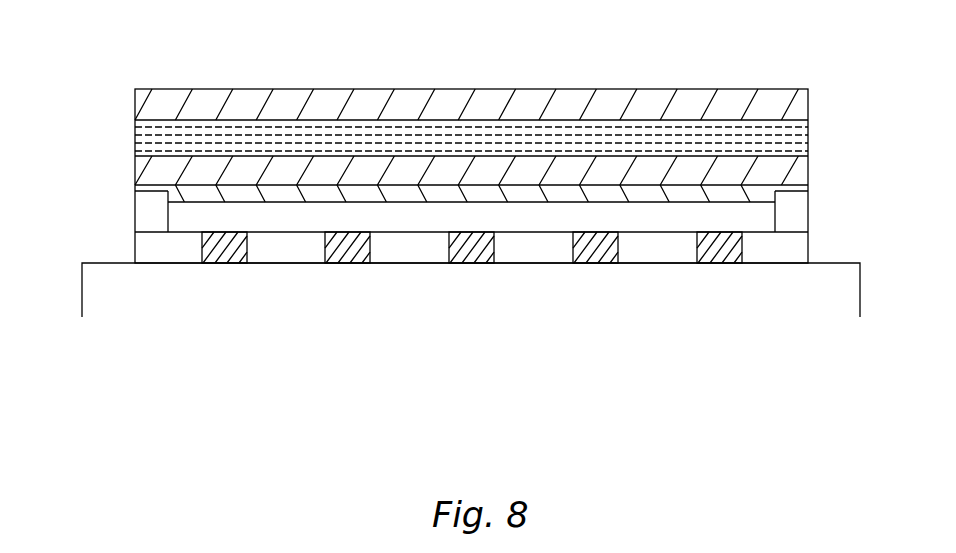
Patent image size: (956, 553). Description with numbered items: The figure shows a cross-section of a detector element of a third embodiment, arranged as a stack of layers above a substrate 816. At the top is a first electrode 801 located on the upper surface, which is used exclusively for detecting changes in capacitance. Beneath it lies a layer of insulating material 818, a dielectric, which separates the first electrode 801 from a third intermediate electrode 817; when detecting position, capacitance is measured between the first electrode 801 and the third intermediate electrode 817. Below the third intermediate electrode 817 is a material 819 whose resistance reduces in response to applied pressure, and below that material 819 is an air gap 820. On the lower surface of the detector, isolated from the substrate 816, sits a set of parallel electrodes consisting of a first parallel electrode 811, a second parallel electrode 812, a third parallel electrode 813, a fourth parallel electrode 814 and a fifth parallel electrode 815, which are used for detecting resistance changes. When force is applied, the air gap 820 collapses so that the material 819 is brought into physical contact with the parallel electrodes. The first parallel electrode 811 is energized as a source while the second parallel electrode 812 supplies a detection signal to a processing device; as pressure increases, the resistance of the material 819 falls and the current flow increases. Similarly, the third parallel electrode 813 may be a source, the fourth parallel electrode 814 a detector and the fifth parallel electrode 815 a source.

The first electrode 801 is at (163, 98).
The first parallel electrode 811 is at (227, 255).
The second parallel electrode 812 is at (349, 253).
The third parallel electrode 813 is at (472, 253).
The fourth parallel electrode 814 is at (595, 253).
The fifth parallel electrode 815 is at (720, 253).
The substrate 816 is at (848, 288).
The third intermediate electrode 817 is at (776, 173).
The layer of insulating material 818 is at (797, 140).
The material 819 is at (188, 195).
The air gap 820 is at (748, 220).